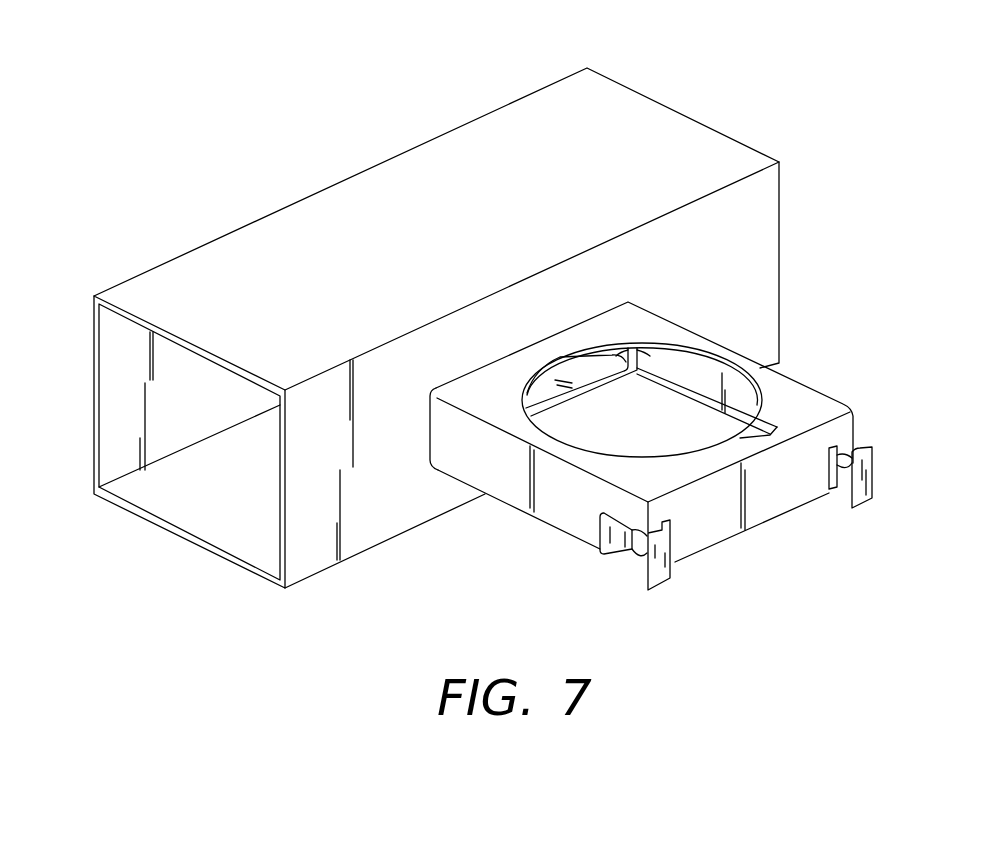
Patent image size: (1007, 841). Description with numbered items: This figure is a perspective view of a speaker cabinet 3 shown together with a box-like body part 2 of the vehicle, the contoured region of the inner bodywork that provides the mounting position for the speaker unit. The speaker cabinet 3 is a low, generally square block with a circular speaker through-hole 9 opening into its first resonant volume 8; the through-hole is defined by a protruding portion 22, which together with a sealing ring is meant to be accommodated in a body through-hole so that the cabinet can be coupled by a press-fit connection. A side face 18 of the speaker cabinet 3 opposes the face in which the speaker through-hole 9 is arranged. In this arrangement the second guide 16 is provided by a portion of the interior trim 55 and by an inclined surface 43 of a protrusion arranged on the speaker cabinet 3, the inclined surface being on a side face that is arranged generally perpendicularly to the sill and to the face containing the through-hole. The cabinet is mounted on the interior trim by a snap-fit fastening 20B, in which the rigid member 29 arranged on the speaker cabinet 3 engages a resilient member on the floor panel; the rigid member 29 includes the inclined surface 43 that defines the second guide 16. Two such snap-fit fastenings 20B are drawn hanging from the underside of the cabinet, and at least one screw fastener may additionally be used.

The body part 2 is at (716, 112).
The side face 18 is at (758, 207).
The speaker cabinet 3 is at (656, 486).
The interior trim 55 is at (547, 525).
The speaker through-hole 9 is at (564, 366).
The protruding portion 22 is at (556, 410).
The first resonant volume 8 is at (710, 424).
The snap-fit fastening 20B is at (708, 439).
The rigid member 29 is at (623, 563).
The second guide 16 is at (619, 574).
The inclined surface 43 is at (639, 556).